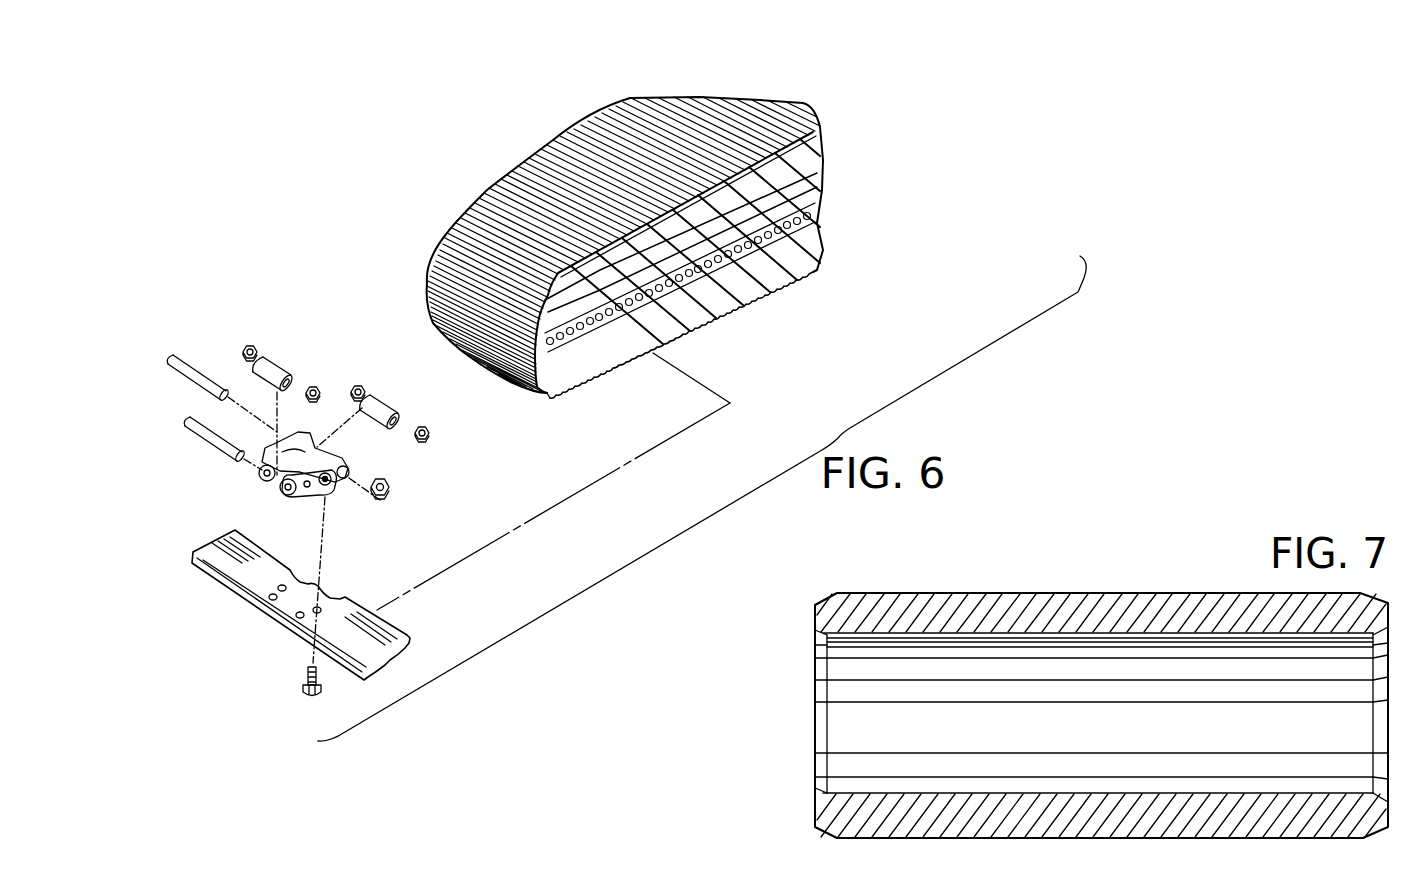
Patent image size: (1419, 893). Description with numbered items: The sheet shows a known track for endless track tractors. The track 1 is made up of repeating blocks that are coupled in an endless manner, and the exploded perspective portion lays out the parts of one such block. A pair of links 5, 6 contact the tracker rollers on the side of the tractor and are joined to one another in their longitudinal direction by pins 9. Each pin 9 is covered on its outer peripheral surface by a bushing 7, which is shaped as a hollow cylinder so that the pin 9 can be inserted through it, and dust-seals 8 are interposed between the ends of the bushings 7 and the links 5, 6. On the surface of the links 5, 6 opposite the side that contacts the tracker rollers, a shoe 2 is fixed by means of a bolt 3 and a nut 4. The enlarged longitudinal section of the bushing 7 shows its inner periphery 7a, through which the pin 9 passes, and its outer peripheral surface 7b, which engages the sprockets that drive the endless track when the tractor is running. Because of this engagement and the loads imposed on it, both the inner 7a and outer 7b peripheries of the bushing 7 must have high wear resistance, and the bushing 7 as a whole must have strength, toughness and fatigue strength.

In FIG. 6, the track 1 is at (484, 177).
In FIG. 6, the shoe 2 is at (410, 636).
In FIG. 6, the bolt 3 is at (323, 693).
In FIG. 6, the nut 4 is at (390, 486).
In FIG. 6, the link 5 is at (288, 503).
In FIG. 6, the link 6 is at (265, 487).
In FIG. 6, the bushing 7 is at (280, 357).
In FIG. 7, the bushing 7 is at (1075, 665).
In FIG. 7, the inner periphery 7a is at (847, 693).
In FIG. 7, the outer peripheral surface 7b is at (1096, 592).
In FIG. 6, the dust-seal 8 is at (249, 343).
In FIG. 6, the pin 9 is at (185, 380).